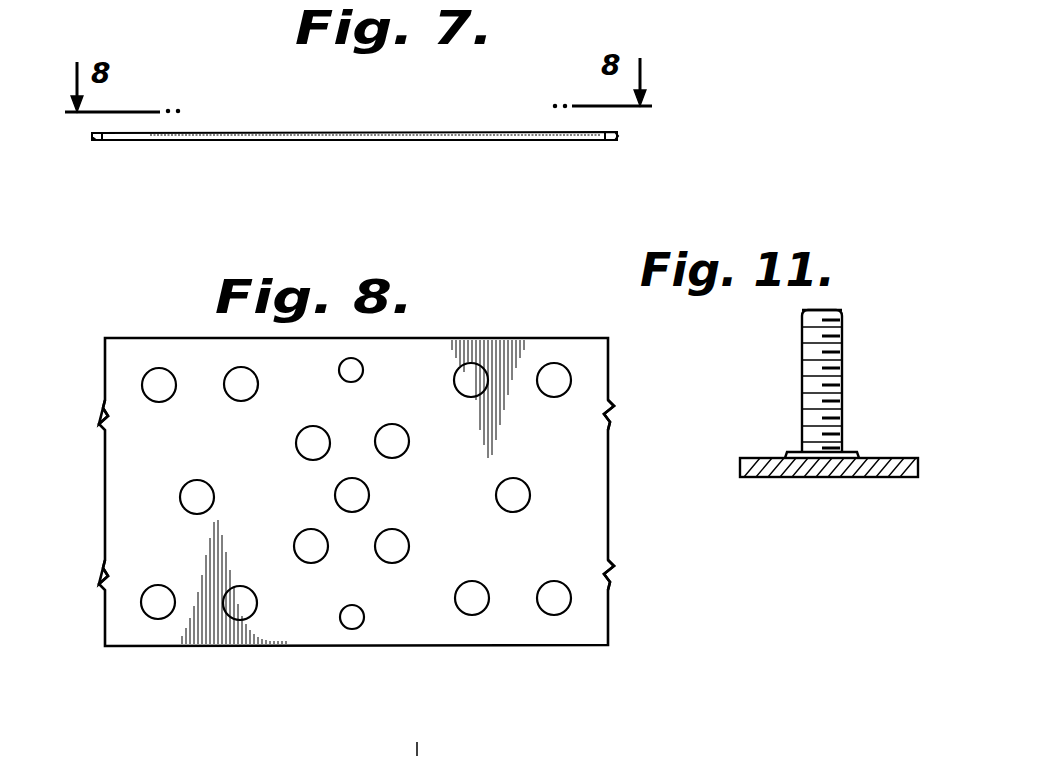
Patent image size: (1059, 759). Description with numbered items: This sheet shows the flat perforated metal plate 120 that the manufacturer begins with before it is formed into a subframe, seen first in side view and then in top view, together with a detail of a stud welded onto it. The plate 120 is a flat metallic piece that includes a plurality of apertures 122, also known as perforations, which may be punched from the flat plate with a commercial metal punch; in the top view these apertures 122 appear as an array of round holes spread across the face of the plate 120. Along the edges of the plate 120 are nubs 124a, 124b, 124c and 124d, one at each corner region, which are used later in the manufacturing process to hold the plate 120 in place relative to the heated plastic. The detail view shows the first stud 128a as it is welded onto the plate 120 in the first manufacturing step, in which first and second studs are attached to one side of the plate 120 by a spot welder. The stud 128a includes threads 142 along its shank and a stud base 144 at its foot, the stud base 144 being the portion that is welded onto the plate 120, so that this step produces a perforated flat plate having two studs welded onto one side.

In FIG. 7, the plate 120 is at (360, 139).
In FIG. 8, the plate 120 is at (400, 612).
In FIG. 11, the plate 120 is at (866, 478).
In FIG. 8, the apertures 122 is at (240, 609).
In FIG. 8, the nub 124a is at (100, 404).
In FIG. 7, the nub 124b is at (97, 141).
In FIG. 8, the nub 124b is at (100, 592).
In FIG. 7, the nub 124c is at (618, 136).
In FIG. 8, the nub 124c is at (616, 578).
In FIG. 8, the nub 124d is at (614, 410).
In FIG. 11, the first stud 128a is at (825, 310).
In FIG. 11, the threads 142 is at (842, 348).
In FIG. 11, the stud base 144 is at (790, 450).